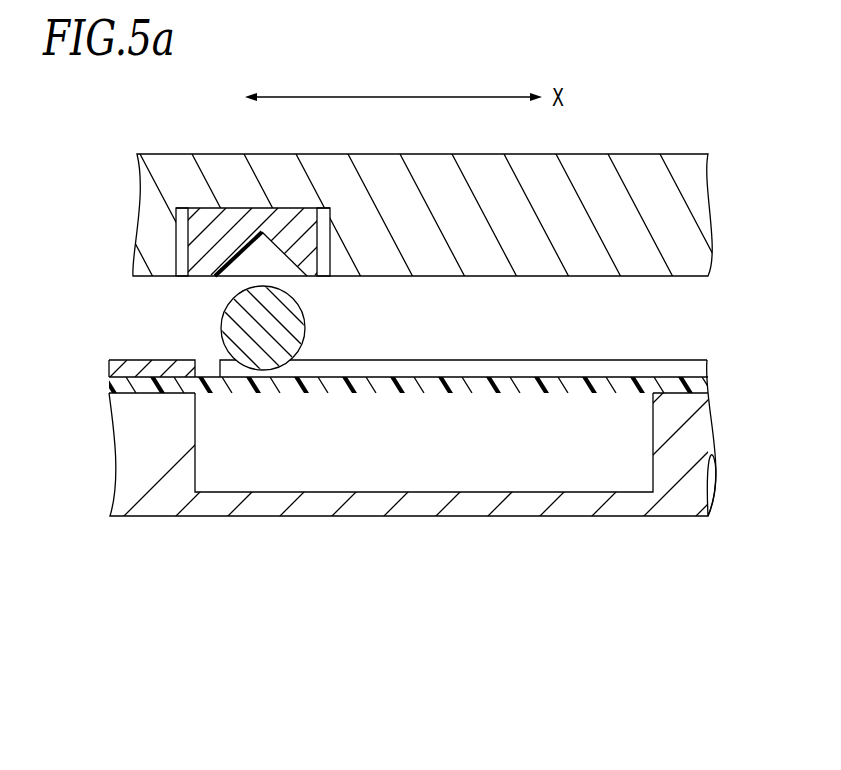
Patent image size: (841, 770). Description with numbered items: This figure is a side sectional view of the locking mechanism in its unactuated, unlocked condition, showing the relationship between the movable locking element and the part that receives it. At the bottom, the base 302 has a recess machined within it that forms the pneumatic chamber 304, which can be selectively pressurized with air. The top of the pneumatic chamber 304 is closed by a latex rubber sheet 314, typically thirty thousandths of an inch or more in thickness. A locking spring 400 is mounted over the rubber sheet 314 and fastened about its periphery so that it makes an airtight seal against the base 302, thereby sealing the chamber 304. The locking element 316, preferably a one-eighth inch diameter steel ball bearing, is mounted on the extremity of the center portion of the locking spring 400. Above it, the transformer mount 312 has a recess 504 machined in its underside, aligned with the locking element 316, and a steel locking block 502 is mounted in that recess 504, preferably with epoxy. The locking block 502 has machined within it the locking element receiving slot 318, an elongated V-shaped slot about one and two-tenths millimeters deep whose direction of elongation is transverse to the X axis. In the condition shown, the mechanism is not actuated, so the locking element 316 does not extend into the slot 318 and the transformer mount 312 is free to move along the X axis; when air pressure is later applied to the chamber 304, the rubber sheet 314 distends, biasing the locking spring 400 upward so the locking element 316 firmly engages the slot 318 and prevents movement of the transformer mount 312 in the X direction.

The transformer mount 312 is at (633, 162).
The locking element receiving slot 318 is at (263, 253).
The locking block 502 is at (203, 268).
The recess 504 is at (322, 270).
The locking element 316 is at (305, 329).
The locking spring 400 is at (622, 367).
The rubber sheet 314 is at (706, 381).
The base 302 is at (712, 478).
The pneumatic chamber 304 is at (573, 487).